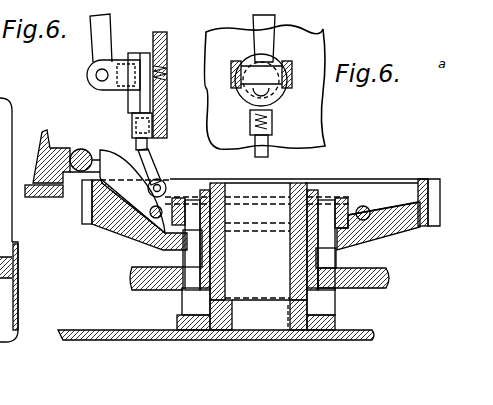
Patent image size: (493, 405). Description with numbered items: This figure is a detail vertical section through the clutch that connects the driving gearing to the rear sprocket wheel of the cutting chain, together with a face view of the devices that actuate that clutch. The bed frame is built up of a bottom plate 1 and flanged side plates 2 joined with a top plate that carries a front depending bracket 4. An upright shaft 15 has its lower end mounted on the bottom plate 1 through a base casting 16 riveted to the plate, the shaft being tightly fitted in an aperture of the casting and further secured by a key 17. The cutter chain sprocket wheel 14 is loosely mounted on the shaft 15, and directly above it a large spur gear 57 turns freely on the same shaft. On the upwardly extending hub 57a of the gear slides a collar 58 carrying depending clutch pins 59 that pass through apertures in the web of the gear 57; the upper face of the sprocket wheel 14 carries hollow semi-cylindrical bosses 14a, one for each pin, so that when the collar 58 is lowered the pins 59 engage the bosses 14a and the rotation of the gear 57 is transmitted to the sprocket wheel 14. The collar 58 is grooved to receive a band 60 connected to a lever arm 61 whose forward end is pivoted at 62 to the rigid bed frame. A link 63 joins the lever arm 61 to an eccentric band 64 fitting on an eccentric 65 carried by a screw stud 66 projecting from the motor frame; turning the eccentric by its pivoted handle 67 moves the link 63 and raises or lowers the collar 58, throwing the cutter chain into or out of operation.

In FIG. 6, the bottom plate 1 is at (163, 333).
In FIG. 6, the flanged side plate 2 is at (18, 318).
In FIG. 6, the front depending bracket 4 is at (6, 155).
In FIG. 6, the sprocket wheel 14 is at (370, 272).
In FIG. 6, the hollow semi-cylindrical boss 14a is at (348, 253).
In FIG. 6, the upright shaft 15 is at (278, 290).
In FIG. 6, the base casting 16 is at (332, 335).
In FIG. 6, the key 17 is at (296, 325).
In FIG. 6, the spur gear 57 is at (93, 219).
In FIG. 6, the hub 57a is at (307, 193).
In FIG. 6, the collar 58 is at (343, 209).
In FIG. 6, the clutch pin 59 is at (193, 249).
In FIG. 6, the band 60 is at (372, 213).
In FIG. 6, the lever arm 61 is at (107, 158).
In FIG. 6, the pivot 62 is at (73, 158).
In FIG. 6, the link 63 is at (150, 170).
In FIG. 6A, the eccentric band 64 is at (278, 103).
In FIG. 6A, the eccentric 65 is at (248, 96).
In FIG. 6, the screw stud 66 is at (165, 78).
In FIG. 6, the pivoted handle 67 is at (110, 38).
In FIG. 6A, the pivoted handle 67 is at (268, 34).